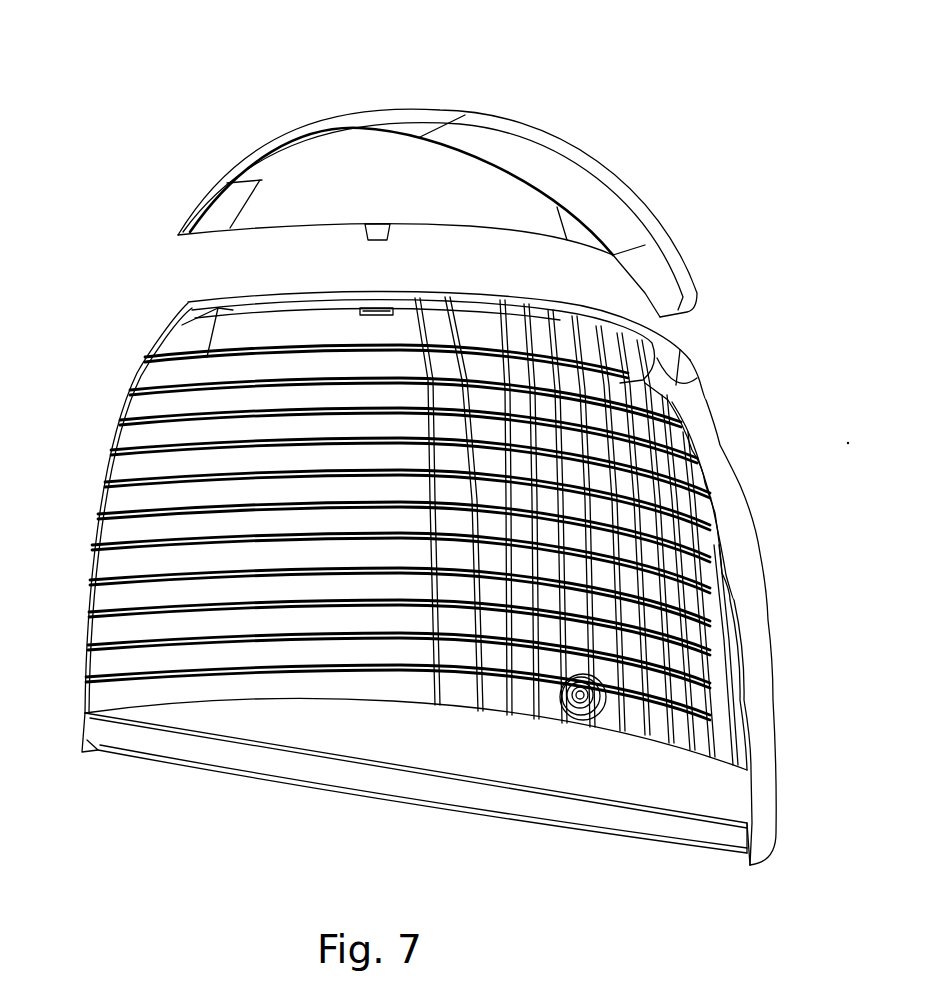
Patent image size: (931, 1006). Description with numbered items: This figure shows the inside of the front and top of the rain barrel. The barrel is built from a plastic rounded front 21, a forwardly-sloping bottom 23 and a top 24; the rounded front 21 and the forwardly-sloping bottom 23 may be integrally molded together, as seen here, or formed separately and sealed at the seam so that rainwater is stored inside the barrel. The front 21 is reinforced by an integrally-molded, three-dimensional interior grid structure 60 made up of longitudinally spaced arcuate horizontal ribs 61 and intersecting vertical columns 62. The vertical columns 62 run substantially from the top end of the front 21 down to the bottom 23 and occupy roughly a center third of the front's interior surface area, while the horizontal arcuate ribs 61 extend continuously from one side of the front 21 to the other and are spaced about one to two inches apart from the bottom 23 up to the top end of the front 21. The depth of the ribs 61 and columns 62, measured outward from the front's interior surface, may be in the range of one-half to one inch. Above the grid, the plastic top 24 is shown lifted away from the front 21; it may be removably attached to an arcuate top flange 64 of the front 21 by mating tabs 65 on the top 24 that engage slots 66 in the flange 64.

The rounded front 21 is at (735, 533).
The forwardly-sloping bottom 23 is at (473, 750).
The top 24 is at (527, 133).
The interior grid structure 60 is at (388, 509).
The horizontal arcuate ribs 61 is at (113, 517).
The vertical columns 62 is at (428, 345).
The arcuate top flange 64 is at (223, 300).
The tabs 65 is at (367, 235).
The slots 66 is at (375, 310).